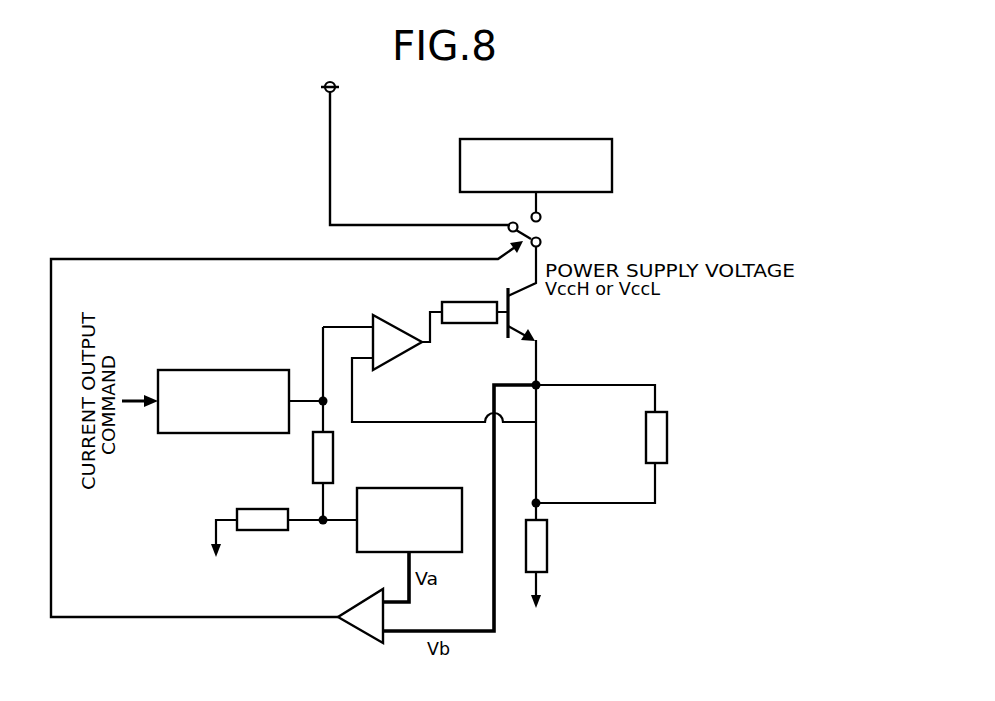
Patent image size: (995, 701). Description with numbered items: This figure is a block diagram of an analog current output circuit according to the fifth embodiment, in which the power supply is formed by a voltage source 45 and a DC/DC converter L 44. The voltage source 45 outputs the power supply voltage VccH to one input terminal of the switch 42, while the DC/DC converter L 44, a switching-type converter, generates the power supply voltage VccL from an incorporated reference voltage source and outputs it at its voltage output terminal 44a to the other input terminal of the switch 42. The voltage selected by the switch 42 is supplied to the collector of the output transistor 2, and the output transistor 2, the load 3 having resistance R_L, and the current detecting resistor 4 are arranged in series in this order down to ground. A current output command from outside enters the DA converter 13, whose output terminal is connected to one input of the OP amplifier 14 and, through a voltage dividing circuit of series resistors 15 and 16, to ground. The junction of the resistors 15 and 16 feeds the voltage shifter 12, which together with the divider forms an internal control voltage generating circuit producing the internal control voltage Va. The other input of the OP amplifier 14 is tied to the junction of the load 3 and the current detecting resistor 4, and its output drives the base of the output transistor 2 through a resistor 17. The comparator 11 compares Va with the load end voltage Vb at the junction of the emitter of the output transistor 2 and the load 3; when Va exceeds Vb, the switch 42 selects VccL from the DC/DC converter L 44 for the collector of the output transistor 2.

The voltage source 45 is at (323, 95).
The DC/DC converter L 44 is at (612, 165).
The voltage output terminal 44a is at (541, 194).
The switch 42 is at (540, 229).
The resistor 17 is at (469, 299).
The OP amplifier 14 is at (386, 315).
The output transistor 2 is at (505, 330).
The DA converter 13 is at (268, 368).
The resistor 15 is at (333, 458).
The resistor 16 is at (270, 507).
The voltage shifter 12 is at (428, 487).
The comparator 11 is at (343, 606).
The load 3 is at (667, 438).
The current detecting resistor 4 is at (547, 546).